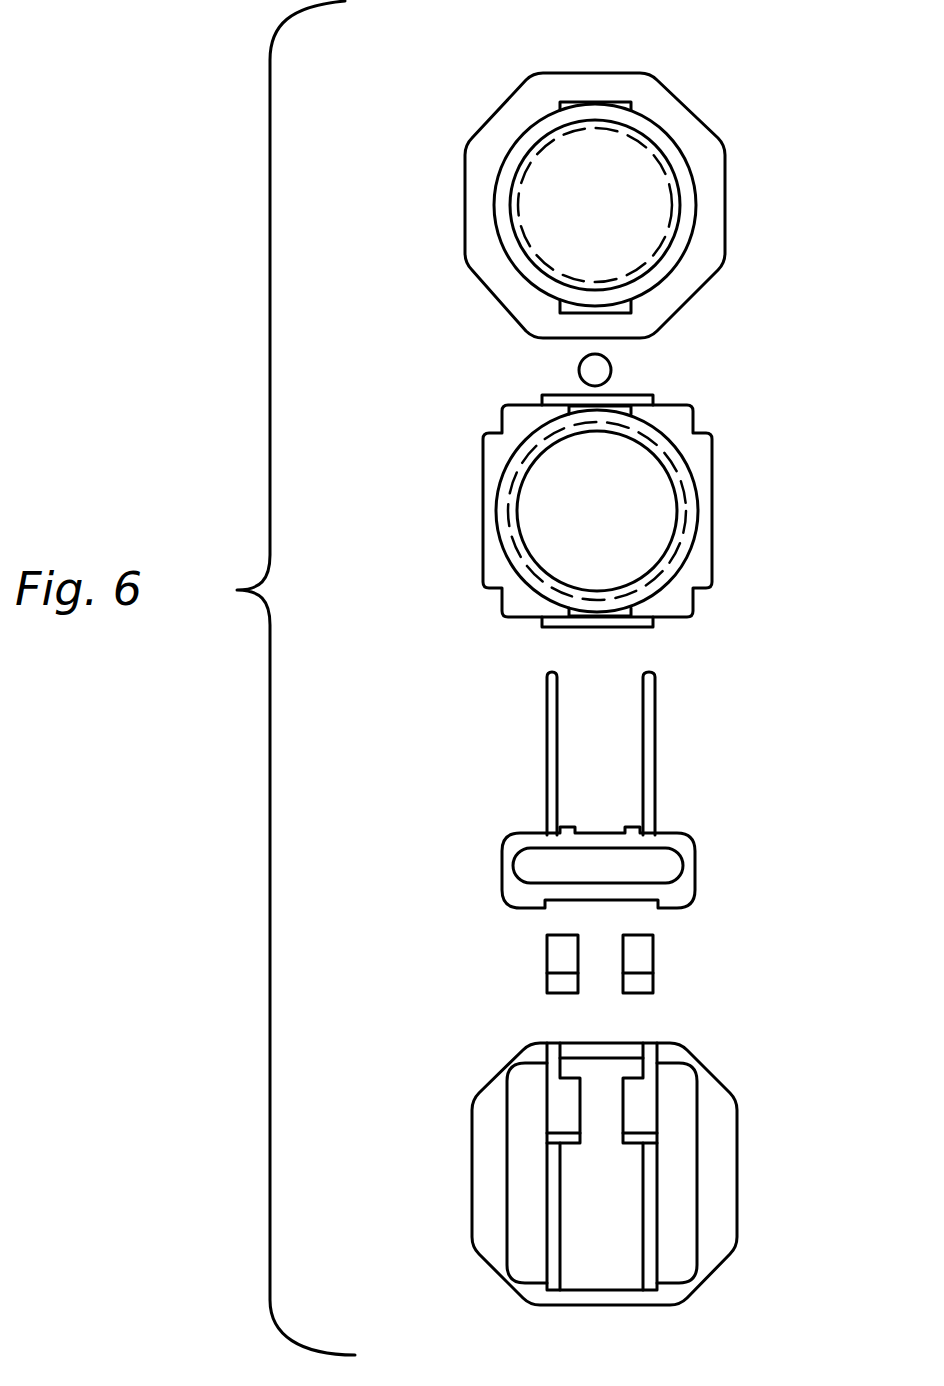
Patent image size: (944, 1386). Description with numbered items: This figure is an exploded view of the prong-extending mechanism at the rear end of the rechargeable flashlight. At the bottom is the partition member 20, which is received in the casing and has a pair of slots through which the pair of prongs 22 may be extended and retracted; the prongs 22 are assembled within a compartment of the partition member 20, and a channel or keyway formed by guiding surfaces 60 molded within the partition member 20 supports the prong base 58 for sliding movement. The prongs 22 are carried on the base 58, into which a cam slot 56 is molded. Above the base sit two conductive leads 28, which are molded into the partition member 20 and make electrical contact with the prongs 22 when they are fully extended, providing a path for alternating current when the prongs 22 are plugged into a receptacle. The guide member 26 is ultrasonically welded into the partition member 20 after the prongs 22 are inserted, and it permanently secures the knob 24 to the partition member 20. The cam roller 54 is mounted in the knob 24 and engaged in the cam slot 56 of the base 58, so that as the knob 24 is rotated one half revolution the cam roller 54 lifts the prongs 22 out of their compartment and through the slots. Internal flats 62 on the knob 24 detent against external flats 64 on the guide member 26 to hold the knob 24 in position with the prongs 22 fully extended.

The partition member 20 is at (737, 1193).
The prongs 22 is at (645, 760).
The knob 24 is at (703, 110).
The guide member 26 is at (693, 412).
The conductive leads 28 is at (553, 957).
The cam roller 54 is at (611, 368).
The cam slot 56 is at (653, 882).
The base 58 is at (684, 835).
The guiding surfaces 60 is at (510, 1146).
The internal flats 62 is at (585, 102).
The external flats 64 is at (584, 407).